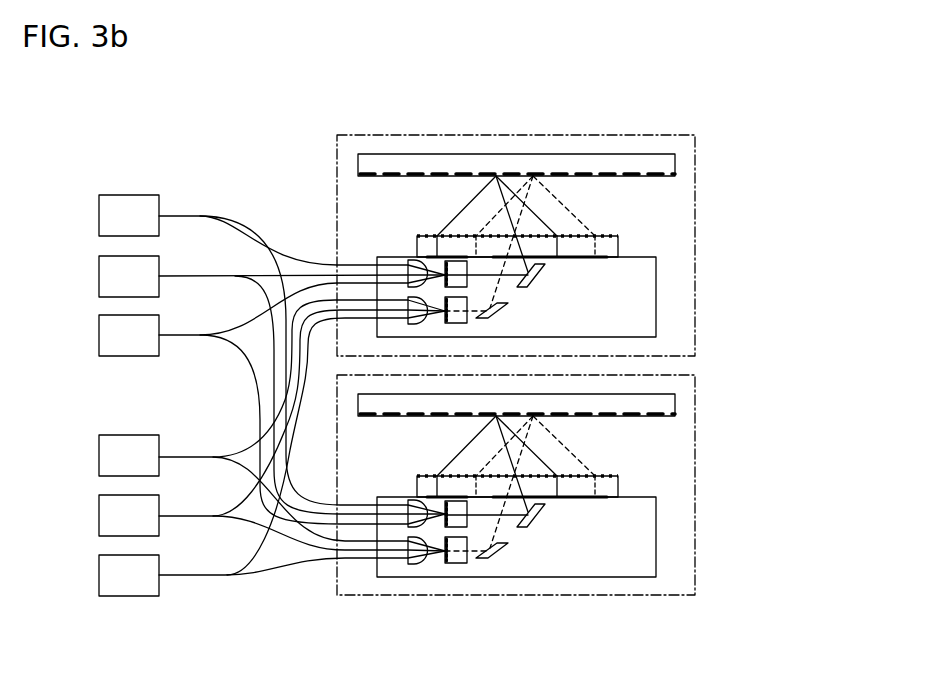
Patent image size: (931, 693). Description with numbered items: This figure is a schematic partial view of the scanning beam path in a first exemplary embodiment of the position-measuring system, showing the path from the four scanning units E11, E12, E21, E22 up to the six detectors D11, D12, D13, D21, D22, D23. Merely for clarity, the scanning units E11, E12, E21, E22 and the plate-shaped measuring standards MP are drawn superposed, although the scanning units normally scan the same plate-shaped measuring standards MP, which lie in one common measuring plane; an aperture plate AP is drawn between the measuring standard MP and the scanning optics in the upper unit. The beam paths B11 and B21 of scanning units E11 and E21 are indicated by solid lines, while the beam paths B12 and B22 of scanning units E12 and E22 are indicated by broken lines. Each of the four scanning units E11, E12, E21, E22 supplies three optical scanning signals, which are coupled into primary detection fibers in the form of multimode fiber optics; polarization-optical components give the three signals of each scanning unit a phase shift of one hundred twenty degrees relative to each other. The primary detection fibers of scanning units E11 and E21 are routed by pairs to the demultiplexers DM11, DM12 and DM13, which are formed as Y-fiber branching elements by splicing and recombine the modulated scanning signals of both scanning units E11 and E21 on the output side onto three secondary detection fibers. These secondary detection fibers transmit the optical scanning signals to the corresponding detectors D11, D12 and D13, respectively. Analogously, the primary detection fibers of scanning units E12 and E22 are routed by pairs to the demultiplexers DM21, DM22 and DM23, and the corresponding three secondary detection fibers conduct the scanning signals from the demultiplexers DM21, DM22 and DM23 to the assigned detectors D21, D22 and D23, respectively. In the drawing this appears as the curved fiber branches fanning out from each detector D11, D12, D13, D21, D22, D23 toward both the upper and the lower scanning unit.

The detector D11 is at (108, 215).
The detector D12 is at (108, 276).
The detector D13 is at (108, 335).
The detector D21 is at (108, 456).
The detector D22 is at (108, 516).
The detector D23 is at (108, 576).
The demultiplexer DM11 is at (302, 365).
The demultiplexer DM12 is at (302, 380).
The demultiplexer DM13 is at (302, 399).
The demultiplexer DM21 is at (302, 425).
The demultiplexer DM22 is at (302, 430).
The demultiplexer DM23 is at (302, 443).
The plate-shaped measuring standard MP is at (543, 172).
The aperture plate AP is at (603, 247).
The beam path B11 is at (443, 216).
The beam path B12 is at (590, 215).
The beam path B21 is at (443, 453).
The beam path B22 is at (590, 453).
The scanning unit E11 is at (541, 245).
The scanning unit E12 is at (541, 245).
The scanning unit E21 is at (556, 485).
The scanning unit E22 is at (556, 485).